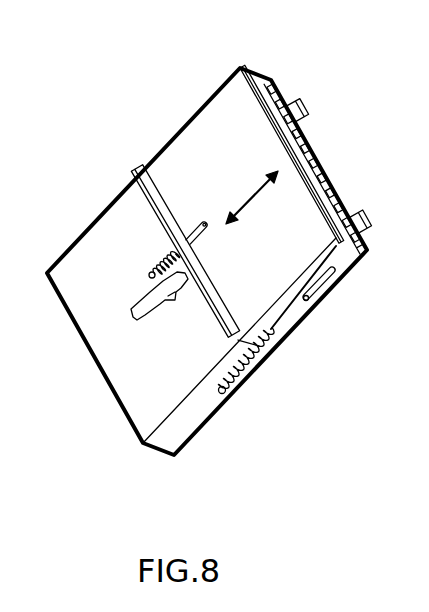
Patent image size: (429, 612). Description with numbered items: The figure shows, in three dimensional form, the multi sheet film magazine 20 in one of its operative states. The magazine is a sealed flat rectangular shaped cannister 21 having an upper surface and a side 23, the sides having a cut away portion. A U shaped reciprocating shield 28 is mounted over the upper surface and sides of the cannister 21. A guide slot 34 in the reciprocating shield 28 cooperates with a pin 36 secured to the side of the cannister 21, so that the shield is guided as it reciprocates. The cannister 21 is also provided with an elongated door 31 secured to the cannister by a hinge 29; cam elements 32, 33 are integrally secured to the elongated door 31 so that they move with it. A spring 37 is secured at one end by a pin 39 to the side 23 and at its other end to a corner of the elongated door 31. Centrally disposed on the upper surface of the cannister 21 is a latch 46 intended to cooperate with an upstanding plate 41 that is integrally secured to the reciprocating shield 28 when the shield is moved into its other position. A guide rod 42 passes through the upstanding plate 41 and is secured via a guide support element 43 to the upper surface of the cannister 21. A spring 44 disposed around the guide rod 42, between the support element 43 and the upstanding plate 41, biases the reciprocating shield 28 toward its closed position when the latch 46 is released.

The multi sheet film magazine 20 is at (127, 166).
The cannister 21 is at (75, 267).
The side 23 is at (188, 443).
The U shaped reciprocating shield 28 is at (238, 175).
The hinge 29 is at (284, 88).
The elongated door 31 is at (252, 78).
The cam element 32 is at (372, 218).
The cam element 33 is at (309, 100).
The guide slot 34 is at (317, 290).
The pin 36 is at (305, 301).
The spring 37 is at (247, 357).
The pin 39 is at (228, 393).
The upstanding plate 41 is at (142, 166).
The guide rod 42 is at (201, 222).
The guide support element 43 is at (150, 266).
The spring 44 is at (168, 252).
The latch 46 is at (137, 320).